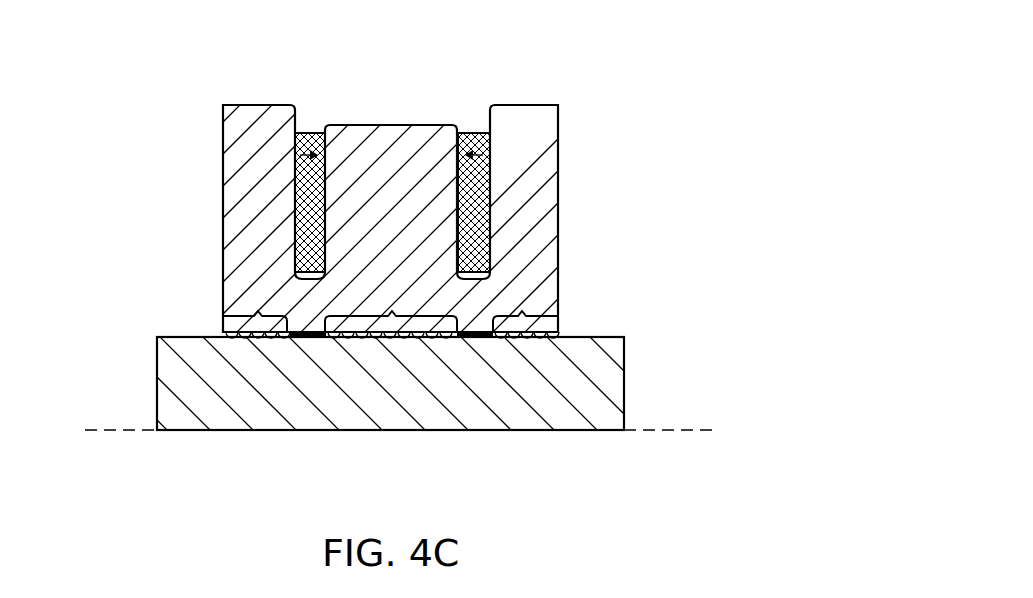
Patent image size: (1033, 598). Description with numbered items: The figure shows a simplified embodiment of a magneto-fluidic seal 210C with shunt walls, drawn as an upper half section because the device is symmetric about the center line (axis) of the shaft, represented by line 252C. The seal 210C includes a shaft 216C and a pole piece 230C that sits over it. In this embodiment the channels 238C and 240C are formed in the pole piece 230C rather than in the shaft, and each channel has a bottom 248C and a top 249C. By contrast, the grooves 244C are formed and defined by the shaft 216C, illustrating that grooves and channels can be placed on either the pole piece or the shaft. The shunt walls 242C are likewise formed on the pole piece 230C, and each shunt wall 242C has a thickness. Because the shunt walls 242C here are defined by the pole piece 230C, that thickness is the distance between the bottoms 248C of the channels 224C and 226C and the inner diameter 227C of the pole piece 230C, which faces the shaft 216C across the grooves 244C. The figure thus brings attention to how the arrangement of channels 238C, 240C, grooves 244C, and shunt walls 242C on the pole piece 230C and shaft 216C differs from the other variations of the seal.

The magneto-fluidic seal 210C is at (593, 85).
The pole piece 230C is at (223, 122).
The top 249C is at (307, 123).
The channel 238C is at (297, 197).
The channel 240C is at (487, 197).
The channel 224C is at (297, 250).
The channel 226C is at (492, 250).
The bottom 248C is at (283, 299).
The groove 244C is at (257, 314).
The shaft 216C is at (157, 368).
The center line (axis) of the shaft 252C is at (666, 430).
The shunt wall 242C is at (305, 311).
The inner diameter of the pole piece 227C is at (303, 336).